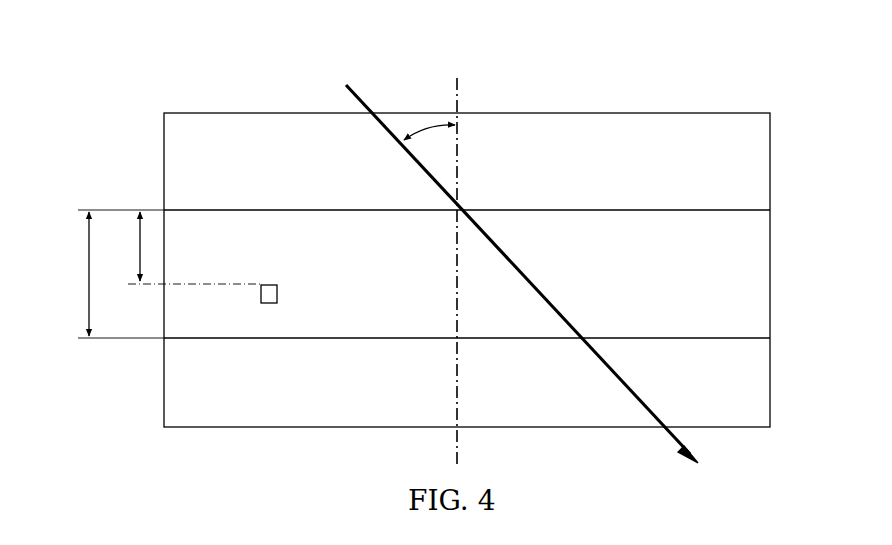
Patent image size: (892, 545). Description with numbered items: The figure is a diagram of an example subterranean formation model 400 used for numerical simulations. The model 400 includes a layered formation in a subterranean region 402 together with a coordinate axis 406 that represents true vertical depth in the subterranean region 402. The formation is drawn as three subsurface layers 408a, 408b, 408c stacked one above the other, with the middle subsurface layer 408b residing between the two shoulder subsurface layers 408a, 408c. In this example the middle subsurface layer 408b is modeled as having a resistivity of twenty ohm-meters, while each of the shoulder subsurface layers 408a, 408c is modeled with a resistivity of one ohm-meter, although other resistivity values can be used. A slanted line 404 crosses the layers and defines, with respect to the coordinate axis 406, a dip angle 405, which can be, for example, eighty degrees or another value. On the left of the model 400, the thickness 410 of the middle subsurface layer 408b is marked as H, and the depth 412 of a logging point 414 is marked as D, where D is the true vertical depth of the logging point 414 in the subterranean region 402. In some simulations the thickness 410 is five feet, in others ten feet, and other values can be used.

The subterranean formation model 400 is at (273, 66).
The subterranean region 402 is at (592, 110).
The well trajectory 404 is at (592, 356).
The dip angle 405 is at (430, 128).
The coordinate axis 406 is at (459, 96).
The subsurface layer 408a is at (762, 161).
The middle subsurface layer 408b is at (762, 273).
The subsurface layer 408c is at (762, 384).
The thickness 410 is at (87, 307).
The depth 412 is at (140, 260).
The logging point 414 is at (259, 295).